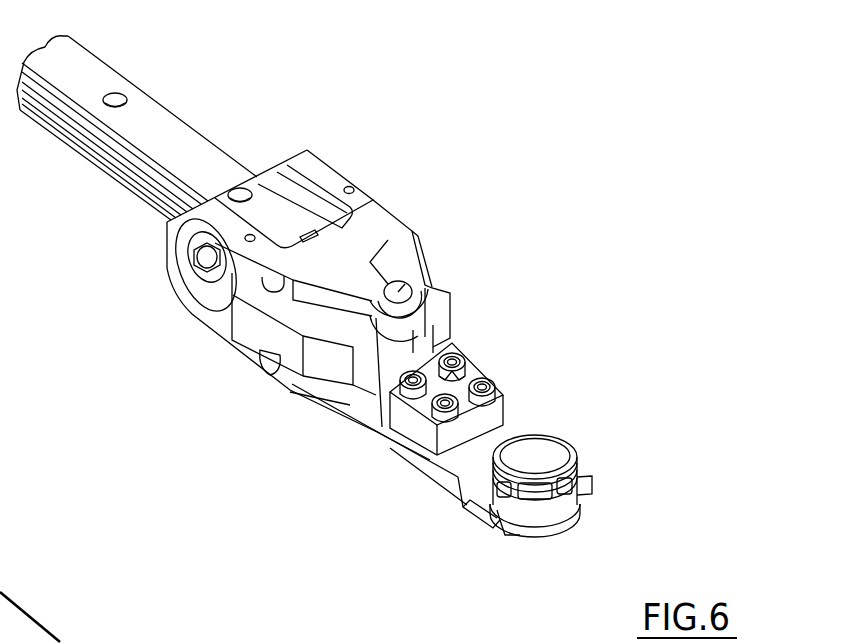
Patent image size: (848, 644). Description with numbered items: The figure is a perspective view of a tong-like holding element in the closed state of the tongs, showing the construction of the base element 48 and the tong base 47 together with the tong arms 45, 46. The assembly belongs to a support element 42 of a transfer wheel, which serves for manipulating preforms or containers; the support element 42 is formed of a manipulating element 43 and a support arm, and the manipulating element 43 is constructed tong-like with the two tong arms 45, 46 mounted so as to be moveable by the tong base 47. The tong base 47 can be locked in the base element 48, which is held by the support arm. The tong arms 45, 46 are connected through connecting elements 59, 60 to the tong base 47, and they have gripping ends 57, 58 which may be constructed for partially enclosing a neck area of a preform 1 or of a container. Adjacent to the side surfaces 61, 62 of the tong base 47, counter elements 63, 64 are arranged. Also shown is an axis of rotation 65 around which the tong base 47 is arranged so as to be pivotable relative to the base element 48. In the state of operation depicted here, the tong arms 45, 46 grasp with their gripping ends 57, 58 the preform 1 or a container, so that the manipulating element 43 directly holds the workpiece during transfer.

The support element 42 is at (390, 150).
The base element 48 is at (208, 315).
The counter element 63 is at (288, 342).
The side surface 61 is at (357, 388).
The tong base 47 is at (372, 388).
The side surface 62 is at (450, 300).
The counter element 64 is at (432, 282).
The axis of rotation 65 is at (400, 290).
The tong arm 46 is at (507, 430).
The connecting element 60 is at (453, 355).
The connecting element 59 is at (438, 423).
The tong arm 45 is at (458, 465).
The manipulating element 43 is at (463, 515).
The gripping end 58 is at (590, 470).
The preform 1 is at (587, 532).
The gripping end 57 is at (505, 535).